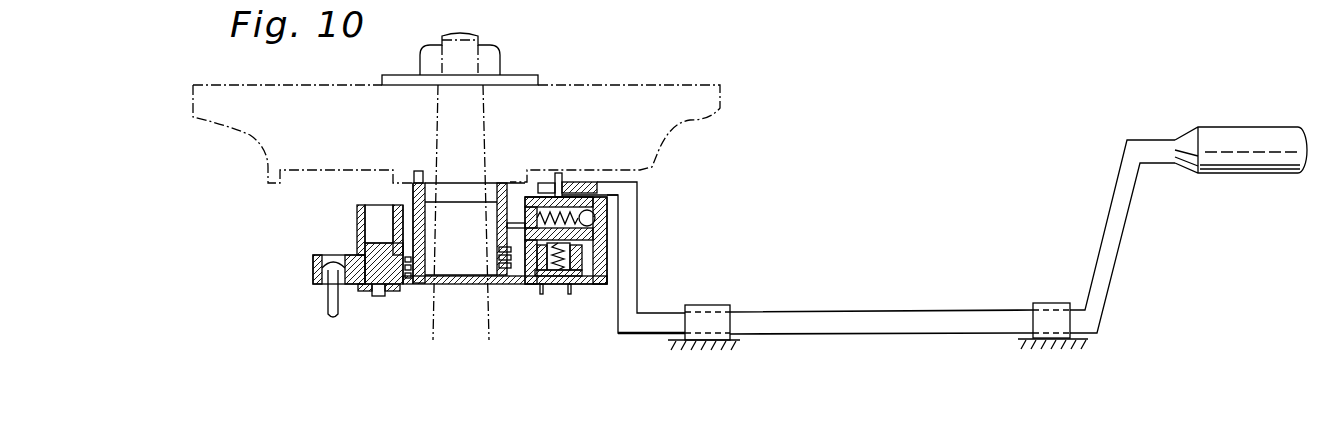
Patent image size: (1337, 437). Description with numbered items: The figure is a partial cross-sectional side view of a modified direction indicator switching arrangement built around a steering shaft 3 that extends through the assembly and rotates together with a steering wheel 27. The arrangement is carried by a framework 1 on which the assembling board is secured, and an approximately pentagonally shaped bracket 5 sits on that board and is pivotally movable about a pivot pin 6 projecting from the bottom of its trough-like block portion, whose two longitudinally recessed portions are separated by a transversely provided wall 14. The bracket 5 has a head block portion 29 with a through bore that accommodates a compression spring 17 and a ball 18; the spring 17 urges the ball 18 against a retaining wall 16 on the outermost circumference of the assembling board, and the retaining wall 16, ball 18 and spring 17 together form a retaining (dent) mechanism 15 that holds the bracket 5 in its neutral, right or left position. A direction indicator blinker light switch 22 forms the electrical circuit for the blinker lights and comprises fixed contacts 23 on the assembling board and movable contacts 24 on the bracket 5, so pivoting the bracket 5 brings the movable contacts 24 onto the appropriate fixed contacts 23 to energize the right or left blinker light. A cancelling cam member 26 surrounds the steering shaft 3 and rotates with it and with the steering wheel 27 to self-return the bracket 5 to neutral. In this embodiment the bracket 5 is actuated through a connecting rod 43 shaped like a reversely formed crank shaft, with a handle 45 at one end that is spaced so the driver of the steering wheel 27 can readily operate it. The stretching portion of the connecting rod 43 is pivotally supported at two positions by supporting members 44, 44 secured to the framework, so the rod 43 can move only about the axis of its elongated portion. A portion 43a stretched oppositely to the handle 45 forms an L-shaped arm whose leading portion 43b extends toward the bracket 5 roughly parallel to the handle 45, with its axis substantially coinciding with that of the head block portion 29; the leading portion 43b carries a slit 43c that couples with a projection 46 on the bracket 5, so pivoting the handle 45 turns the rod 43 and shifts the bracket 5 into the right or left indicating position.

The framework 1 is at (315, 270).
The steering shaft 3 is at (483, 103).
The bracket 5 is at (357, 227).
The pivot pin 6 is at (377, 297).
The transversely provided wall 14 is at (426, 211).
The retaining (dent) mechanism 15 is at (613, 192).
The retaining wall 16 is at (607, 207).
The spring 17 is at (527, 195).
The ball 18 is at (590, 221).
The direction indicator blinker light switch 22 is at (585, 280).
The fixed contacts 23 is at (563, 278).
The movable contacts 24 is at (530, 285).
The cancelling cam member 26 is at (415, 195).
The steering wheel 27 is at (667, 82).
The head block portion 29 is at (588, 181).
The connecting rod 43 is at (867, 318).
The portion 43a is at (640, 257).
The leading portion 43b is at (642, 178).
The slit 43c is at (552, 174).
The supporting members 44 is at (722, 303).
The handle 45 is at (1247, 122).
The projection 46 is at (560, 174).